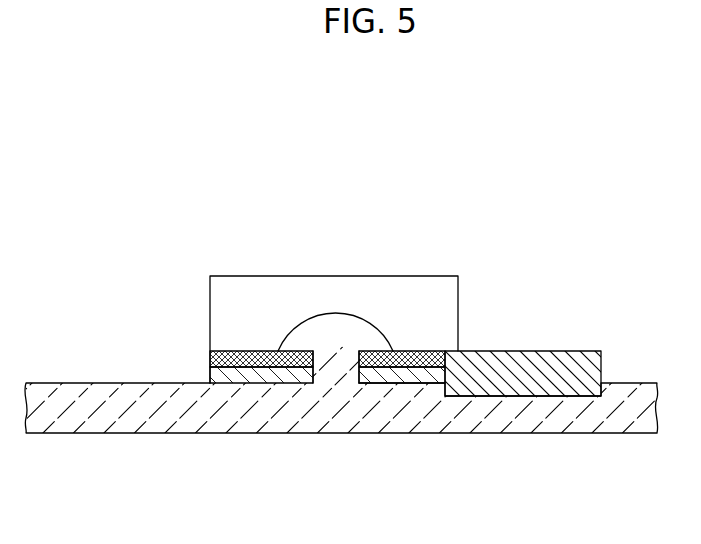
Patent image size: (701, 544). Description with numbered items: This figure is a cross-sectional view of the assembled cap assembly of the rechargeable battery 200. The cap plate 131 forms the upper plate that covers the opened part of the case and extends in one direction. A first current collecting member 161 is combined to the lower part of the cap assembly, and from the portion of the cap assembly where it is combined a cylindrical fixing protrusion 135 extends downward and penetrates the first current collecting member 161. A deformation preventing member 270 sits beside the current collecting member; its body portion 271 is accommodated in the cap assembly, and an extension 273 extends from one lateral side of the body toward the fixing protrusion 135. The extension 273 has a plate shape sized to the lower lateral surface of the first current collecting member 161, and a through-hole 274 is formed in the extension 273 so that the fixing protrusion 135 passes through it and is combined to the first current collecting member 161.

The rechargeable battery 200 is at (180, 195).
The cap plate 131 is at (195, 415).
The fixing protrusion 135 is at (325, 327).
The first current collecting member 161 is at (430, 290).
The deformation preventing member 270 is at (595, 342).
The conductive block 271 is at (515, 360).
The extension 273 is at (260, 377).
The through-hole 274 is at (345, 373).